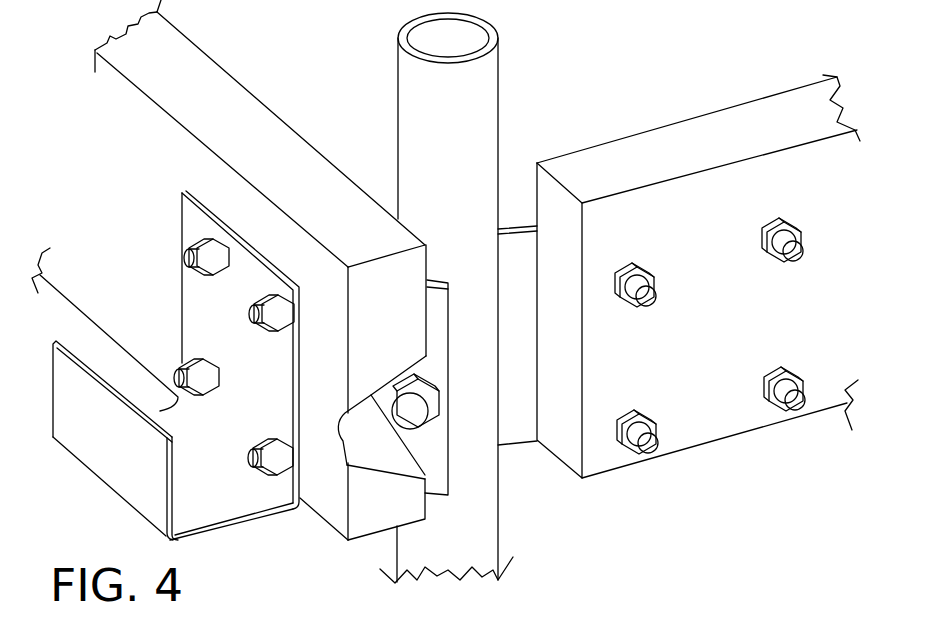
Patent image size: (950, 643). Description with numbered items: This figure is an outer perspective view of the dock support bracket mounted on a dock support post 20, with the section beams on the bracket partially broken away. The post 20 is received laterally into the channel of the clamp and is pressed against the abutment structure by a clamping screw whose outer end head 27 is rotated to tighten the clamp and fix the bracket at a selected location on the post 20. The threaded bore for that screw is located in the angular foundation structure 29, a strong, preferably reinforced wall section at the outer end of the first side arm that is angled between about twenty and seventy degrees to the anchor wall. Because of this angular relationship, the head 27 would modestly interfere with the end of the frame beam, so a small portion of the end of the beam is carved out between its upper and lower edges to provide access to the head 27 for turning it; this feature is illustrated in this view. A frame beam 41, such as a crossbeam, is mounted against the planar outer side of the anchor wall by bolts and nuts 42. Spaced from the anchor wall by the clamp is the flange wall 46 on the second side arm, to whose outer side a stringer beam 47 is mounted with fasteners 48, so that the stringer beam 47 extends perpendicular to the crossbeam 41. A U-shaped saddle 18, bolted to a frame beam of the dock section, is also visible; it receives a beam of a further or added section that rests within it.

The saddle 18 is at (205, 503).
The dock support post 20 is at (461, 107).
The head 27 is at (413, 411).
The angular foundation structure 29 is at (432, 304).
The frame beam 41 is at (137, 231).
The bolts and nuts 42 is at (253, 313).
The flange wall 46 is at (518, 250).
The stringer beam 47 is at (740, 349).
The bolts 48 is at (657, 290).